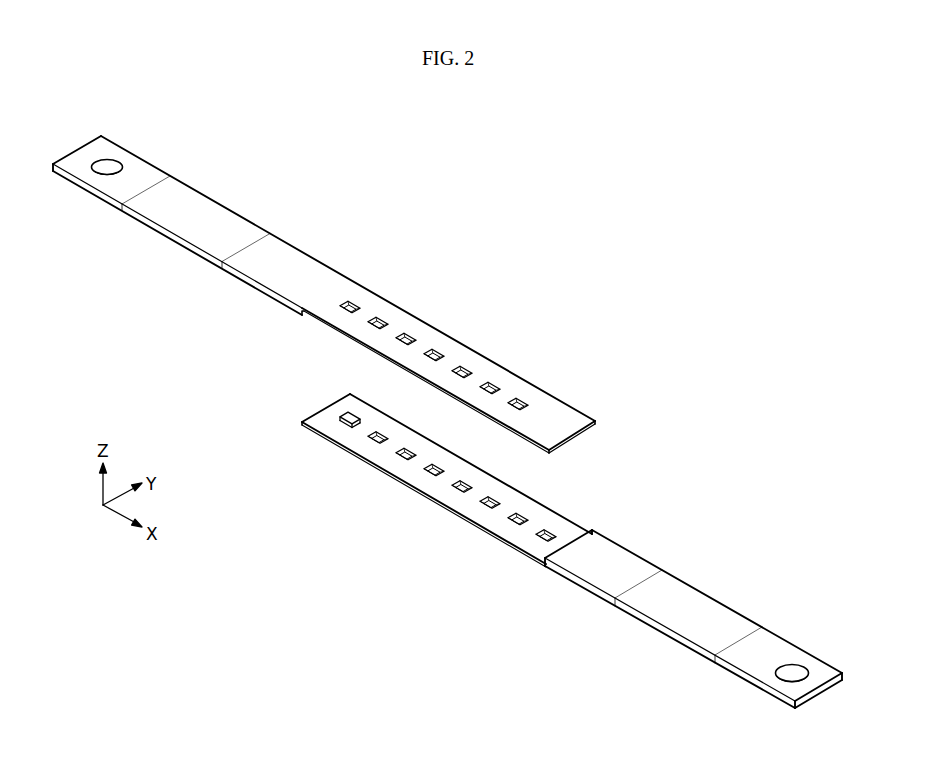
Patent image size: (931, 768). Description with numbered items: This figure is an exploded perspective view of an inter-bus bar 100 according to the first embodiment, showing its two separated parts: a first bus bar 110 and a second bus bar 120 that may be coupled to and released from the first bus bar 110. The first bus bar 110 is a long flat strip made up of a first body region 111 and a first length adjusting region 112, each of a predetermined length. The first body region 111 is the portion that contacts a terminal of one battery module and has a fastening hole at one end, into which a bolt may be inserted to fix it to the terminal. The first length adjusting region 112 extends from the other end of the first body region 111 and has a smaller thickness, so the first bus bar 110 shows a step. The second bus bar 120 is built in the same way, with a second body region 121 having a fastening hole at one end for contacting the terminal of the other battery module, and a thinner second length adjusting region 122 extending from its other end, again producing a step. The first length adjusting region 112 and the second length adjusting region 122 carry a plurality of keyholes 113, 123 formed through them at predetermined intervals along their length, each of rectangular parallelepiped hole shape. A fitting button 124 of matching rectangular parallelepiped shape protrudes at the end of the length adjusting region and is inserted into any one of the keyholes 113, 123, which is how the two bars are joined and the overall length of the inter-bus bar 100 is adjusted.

The inter-bus bar 100 is at (825, 247).
The first bus bar 110 is at (324, 212).
The first body region 111 is at (178, 190).
The first length adjusting region 112 is at (455, 348).
The keyholes 113 is at (493, 383).
The second bus bar 120 is at (656, 516).
The second body region 121 is at (690, 595).
The second length adjusting region 122 is at (467, 507).
The keyholes 123 is at (401, 461).
The fitting button 124 is at (345, 414).